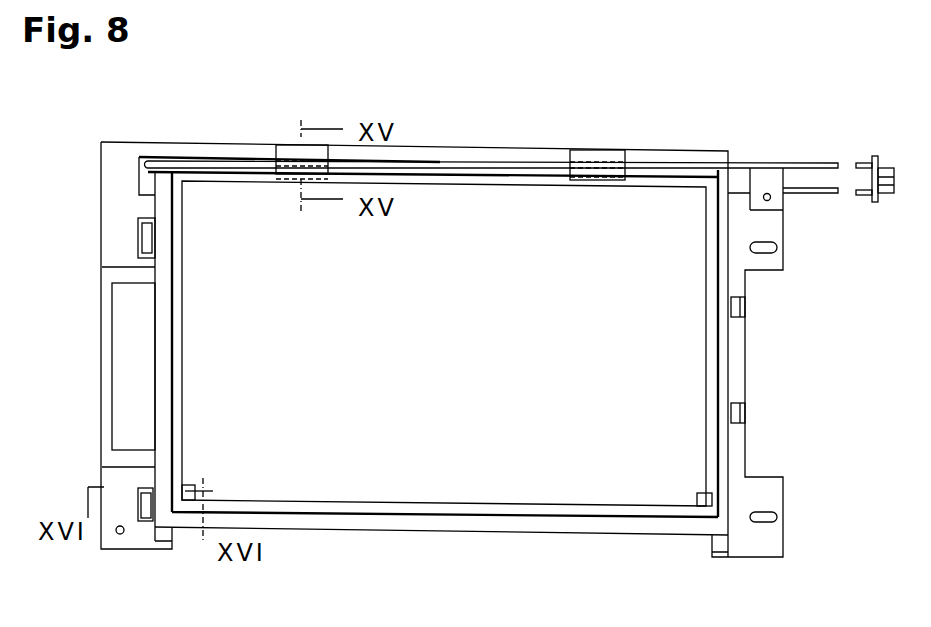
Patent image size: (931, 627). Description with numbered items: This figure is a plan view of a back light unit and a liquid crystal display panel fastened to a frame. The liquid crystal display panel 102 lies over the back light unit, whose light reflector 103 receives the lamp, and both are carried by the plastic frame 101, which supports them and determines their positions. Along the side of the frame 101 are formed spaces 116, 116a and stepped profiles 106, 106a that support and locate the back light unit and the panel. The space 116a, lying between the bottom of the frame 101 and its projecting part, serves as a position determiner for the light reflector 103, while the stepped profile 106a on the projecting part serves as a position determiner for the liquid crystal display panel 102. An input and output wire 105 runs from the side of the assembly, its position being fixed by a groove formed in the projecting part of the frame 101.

The plastic frame 101 is at (452, 147).
The liquid crystal display panel 102 is at (427, 487).
The light reflector 103 is at (757, 178).
The input and output wire 105 is at (827, 162).
The stepped profile 106 is at (745, 305).
The space 116 is at (180, 506).
The stepped profile 106a is at (298, 159).
The space 116a is at (598, 160).